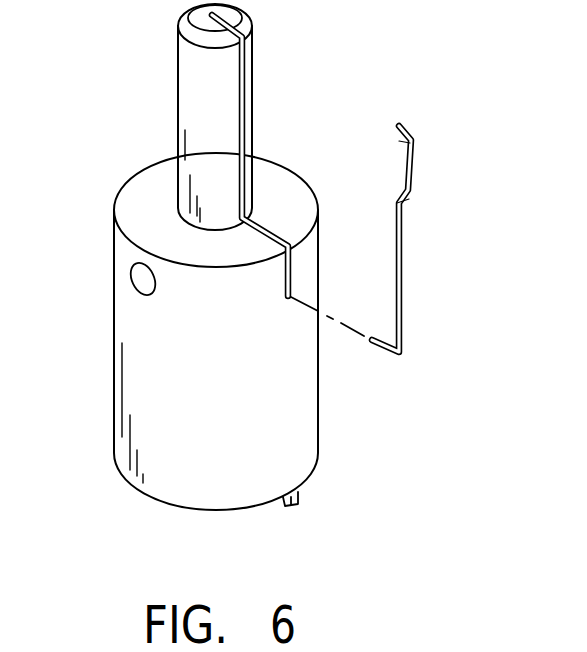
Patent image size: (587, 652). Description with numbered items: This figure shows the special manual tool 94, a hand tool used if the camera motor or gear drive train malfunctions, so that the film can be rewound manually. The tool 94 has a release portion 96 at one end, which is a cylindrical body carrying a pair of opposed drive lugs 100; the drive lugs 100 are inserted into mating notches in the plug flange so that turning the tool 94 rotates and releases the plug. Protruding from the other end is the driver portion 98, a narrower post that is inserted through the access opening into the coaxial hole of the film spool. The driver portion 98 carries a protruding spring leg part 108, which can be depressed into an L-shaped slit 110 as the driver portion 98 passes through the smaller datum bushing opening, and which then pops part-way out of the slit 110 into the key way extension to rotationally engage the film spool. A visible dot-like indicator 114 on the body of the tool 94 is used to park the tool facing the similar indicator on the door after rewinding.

The special manual tool 94 is at (95, 474).
The release portion 96 is at (318, 435).
The driver portion 98 is at (178, 112).
The drive lugs 100 is at (300, 498).
The spring leg part 108 is at (402, 270).
The L-shaped slit 110 is at (243, 96).
The visible dot-like indicator 114 is at (137, 283).